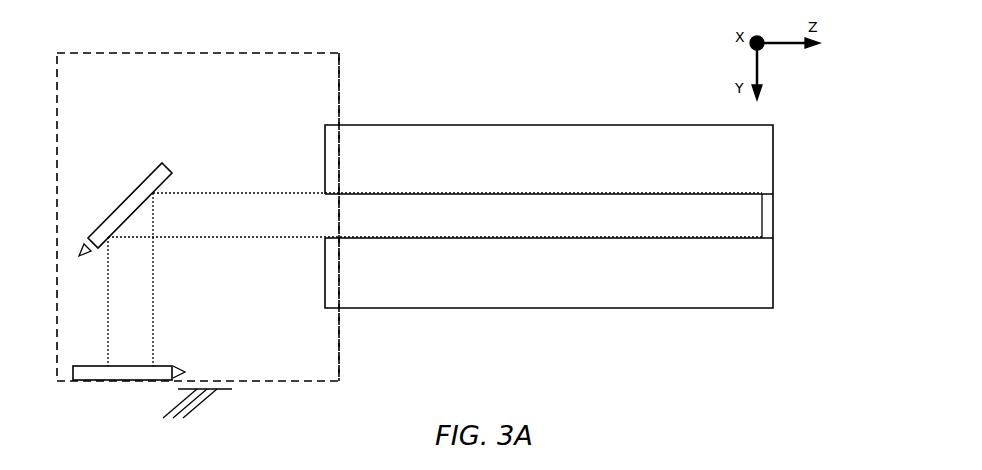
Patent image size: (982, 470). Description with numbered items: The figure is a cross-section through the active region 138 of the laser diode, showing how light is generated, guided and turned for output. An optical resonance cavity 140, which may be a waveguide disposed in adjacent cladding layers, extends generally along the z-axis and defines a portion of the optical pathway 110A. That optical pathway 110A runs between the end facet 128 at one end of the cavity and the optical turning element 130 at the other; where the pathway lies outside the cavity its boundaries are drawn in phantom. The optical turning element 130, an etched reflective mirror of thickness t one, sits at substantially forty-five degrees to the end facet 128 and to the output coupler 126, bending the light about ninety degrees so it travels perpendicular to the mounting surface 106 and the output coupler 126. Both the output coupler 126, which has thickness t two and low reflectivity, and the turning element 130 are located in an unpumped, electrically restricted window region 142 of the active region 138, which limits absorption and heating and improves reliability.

The active region 138 is at (298, 50).
The window region 142 is at (340, 77).
The optical turning element 130 is at (150, 180).
The optical pathway 110A is at (220, 242).
The optical resonance cavity 140 is at (572, 105).
The end facet 128 is at (767, 213).
The output coupler 126 is at (162, 370).
The mounting surface 106 is at (223, 390).